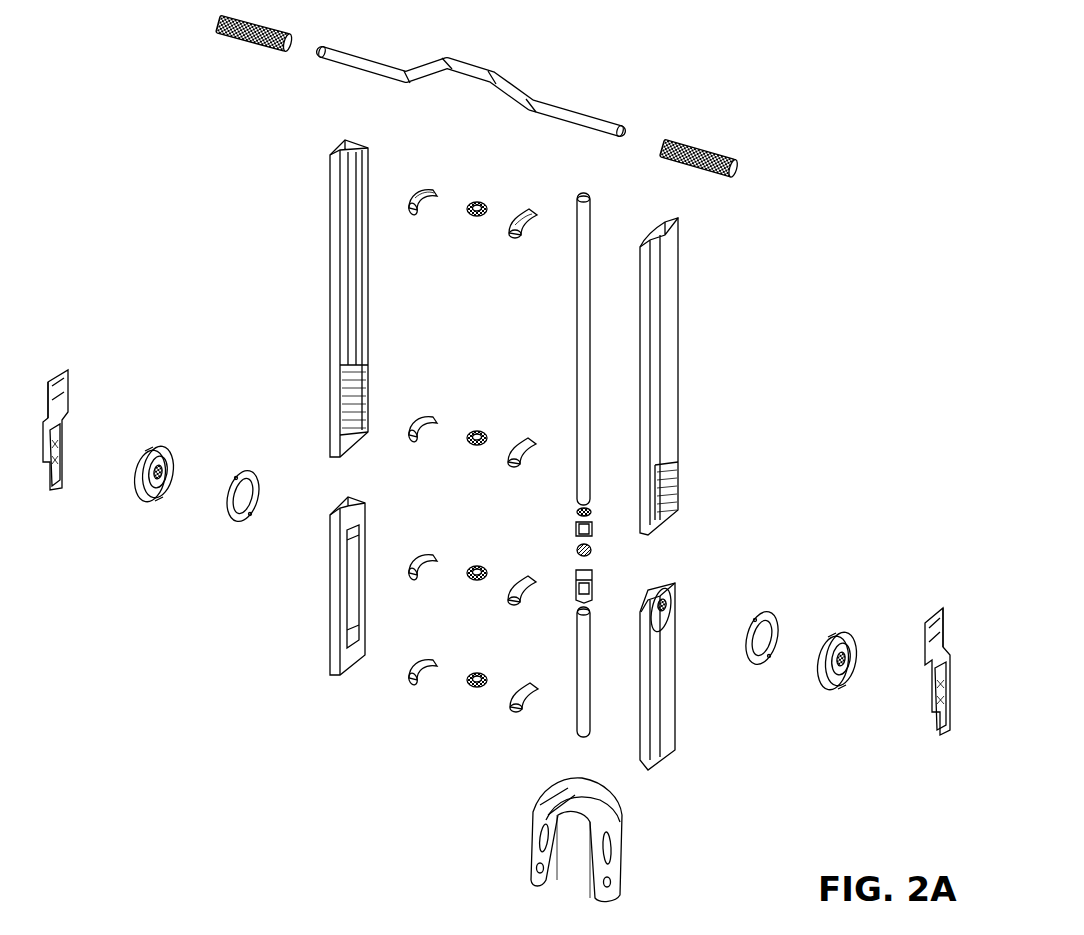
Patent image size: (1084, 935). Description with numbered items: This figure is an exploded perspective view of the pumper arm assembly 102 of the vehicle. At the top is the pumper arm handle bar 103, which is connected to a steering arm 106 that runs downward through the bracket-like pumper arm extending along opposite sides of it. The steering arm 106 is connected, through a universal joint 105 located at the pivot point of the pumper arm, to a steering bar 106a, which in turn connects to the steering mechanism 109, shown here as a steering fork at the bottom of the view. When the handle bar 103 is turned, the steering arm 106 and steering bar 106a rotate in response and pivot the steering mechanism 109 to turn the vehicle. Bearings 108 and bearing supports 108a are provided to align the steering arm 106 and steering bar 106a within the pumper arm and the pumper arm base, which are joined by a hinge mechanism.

The pumper arm assembly 102 is at (216, 181).
The pumper arm handle bar 103 is at (624, 108).
The universal joint 105 is at (556, 519).
The steering arm 106 is at (575, 332).
The steering bar 106a is at (578, 647).
The bearings 108 is at (473, 217).
The bearing supports 108a is at (530, 213).
The steering mechanism 109 is at (553, 797).